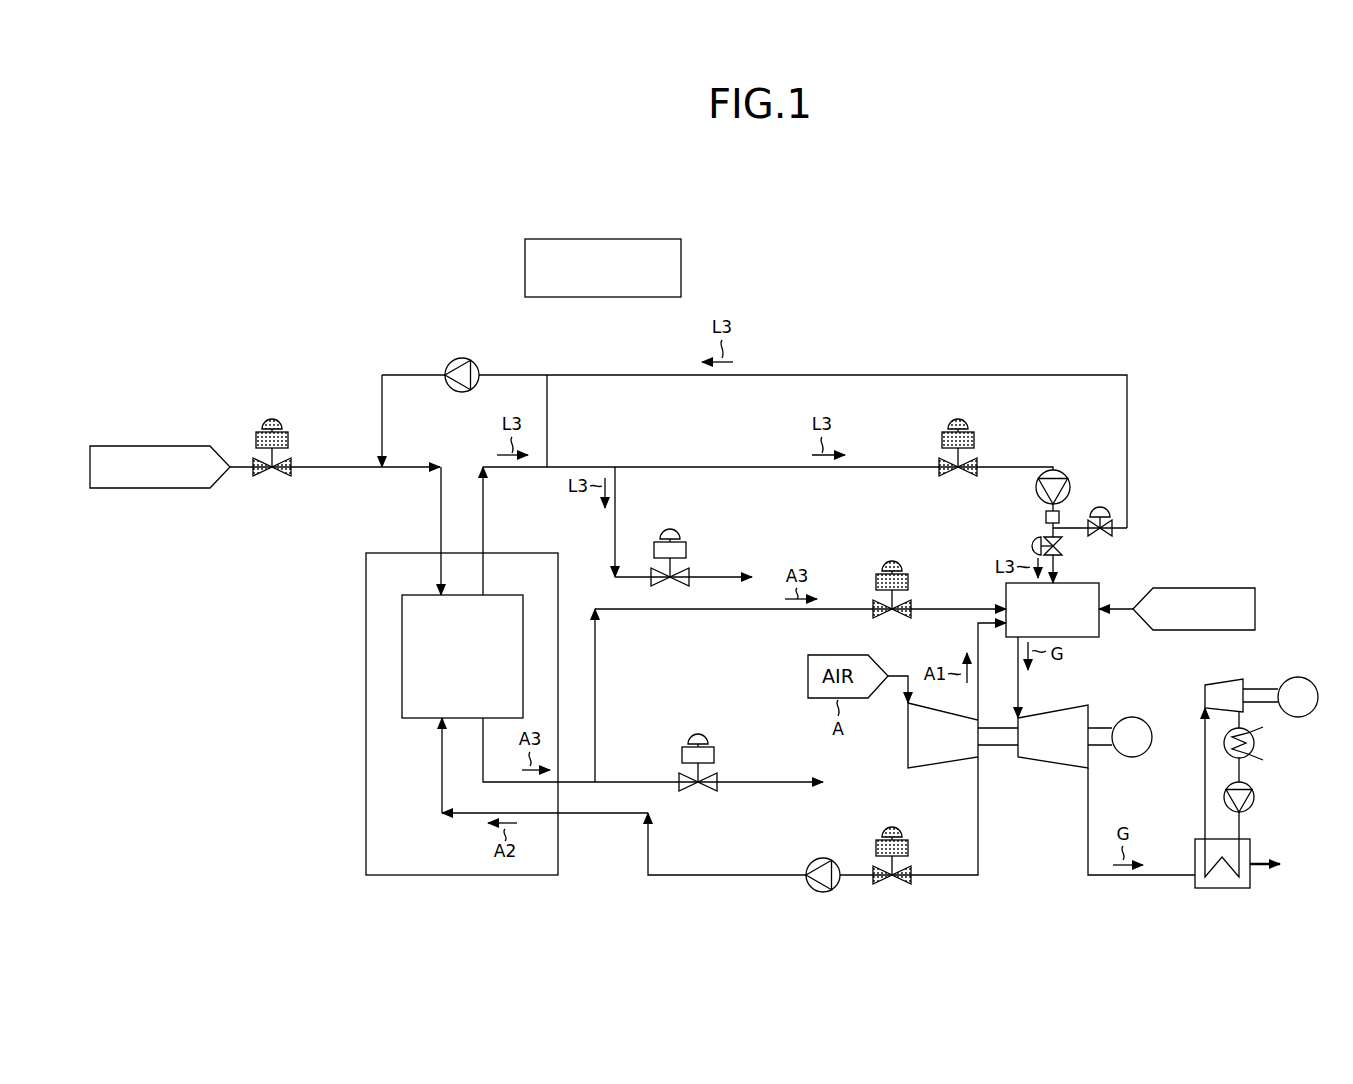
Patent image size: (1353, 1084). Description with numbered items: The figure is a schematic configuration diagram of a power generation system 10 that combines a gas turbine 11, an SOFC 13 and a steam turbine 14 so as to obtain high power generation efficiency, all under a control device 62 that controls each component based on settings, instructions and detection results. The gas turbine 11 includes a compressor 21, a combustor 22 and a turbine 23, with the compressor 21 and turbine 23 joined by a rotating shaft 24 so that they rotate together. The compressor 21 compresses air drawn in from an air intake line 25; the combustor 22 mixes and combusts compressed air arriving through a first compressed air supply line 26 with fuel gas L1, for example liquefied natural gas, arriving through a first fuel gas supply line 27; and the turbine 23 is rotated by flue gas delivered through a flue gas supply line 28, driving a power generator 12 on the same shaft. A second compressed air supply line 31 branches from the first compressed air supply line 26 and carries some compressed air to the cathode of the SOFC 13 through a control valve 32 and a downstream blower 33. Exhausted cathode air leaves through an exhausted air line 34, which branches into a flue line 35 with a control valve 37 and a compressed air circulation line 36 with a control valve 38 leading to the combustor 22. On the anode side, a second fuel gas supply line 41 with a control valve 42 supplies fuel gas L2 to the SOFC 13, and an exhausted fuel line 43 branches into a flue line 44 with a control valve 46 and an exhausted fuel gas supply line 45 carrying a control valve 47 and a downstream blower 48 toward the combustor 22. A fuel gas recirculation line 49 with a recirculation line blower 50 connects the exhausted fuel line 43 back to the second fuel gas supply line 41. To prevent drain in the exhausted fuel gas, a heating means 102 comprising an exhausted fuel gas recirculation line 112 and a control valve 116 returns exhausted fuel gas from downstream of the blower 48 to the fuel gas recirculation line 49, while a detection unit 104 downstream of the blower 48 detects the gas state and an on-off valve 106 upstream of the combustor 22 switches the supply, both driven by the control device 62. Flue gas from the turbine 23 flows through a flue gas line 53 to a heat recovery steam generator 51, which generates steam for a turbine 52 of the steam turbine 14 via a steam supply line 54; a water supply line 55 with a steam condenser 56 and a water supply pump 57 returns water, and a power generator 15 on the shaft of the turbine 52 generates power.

The power generation system 10 is at (920, 317).
The gas turbine 11 is at (1092, 705).
The power generator 12 is at (1132, 758).
The SOFC 13 is at (401, 643).
The steam turbine 14 is at (1262, 674).
The power generator 15 is at (1298, 675).
The compressor 21 is at (943, 766).
The combustor 22 is at (1004, 590).
The turbine 23 is at (1050, 766).
The rotating shaft 24 is at (1000, 748).
The air intake line 25 is at (898, 672).
The first compressed air supply line 26 is at (976, 630).
The first fuel gas supply line 27 is at (1120, 606).
The flue gas supply line 28 is at (1022, 680).
The second compressed air supply line 31 is at (750, 878).
The control valve 32 is at (890, 821).
The blower 33 is at (822, 857).
The exhausted air line 34 is at (480, 746).
The flue line 35 is at (633, 774).
The compressed air circulation line 36 is at (772, 612).
The control valve 37 is at (698, 724).
The control valve 38 is at (890, 554).
The second fuel gas supply line 41 is at (333, 466).
The control valve 42 is at (272, 412).
The exhausted fuel line 43 is at (515, 478).
The flue line 44 is at (722, 574).
The exhausted fuel gas supply line 45 is at (767, 466).
The control valve 46 is at (668, 522).
The control valve 47 is at (967, 422).
The blower 48 is at (1034, 488).
The fuel gas recirculation line 49 is at (530, 373).
The recirculation line blower 50 is at (462, 357).
The heat recovery steam generator 51 is at (1252, 885).
The turbine 52 is at (1205, 692).
The flue gas line 53 is at (1110, 878).
The steam supply line 54 is at (1205, 797).
The water supply line 55 is at (1241, 824).
The steam condenser 56 is at (1256, 744).
The water supply pump 57 is at (1256, 797).
The control device 62 is at (604, 239).
The heating means 102 is at (822, 330).
The detection unit 104 is at (1045, 518).
The on-off valve 106 is at (1030, 546).
The exhausted fuel gas recirculation line 112 is at (852, 373).
The control valve 116 is at (1100, 505).
The fuel gas L1 is at (1176, 585).
The fuel gas L2 is at (148, 443).